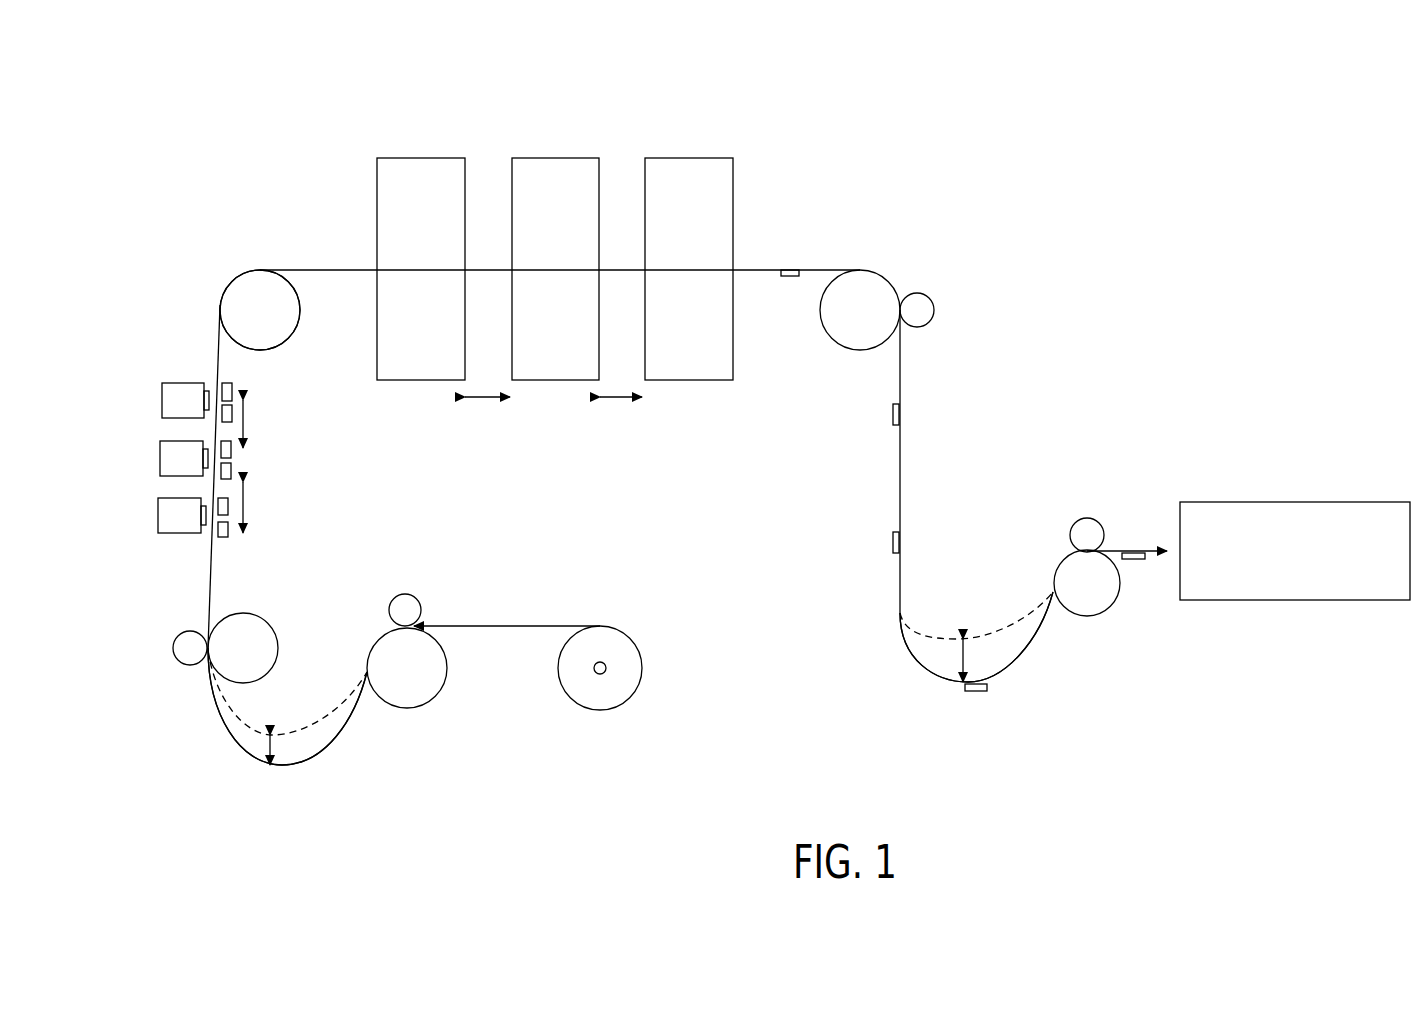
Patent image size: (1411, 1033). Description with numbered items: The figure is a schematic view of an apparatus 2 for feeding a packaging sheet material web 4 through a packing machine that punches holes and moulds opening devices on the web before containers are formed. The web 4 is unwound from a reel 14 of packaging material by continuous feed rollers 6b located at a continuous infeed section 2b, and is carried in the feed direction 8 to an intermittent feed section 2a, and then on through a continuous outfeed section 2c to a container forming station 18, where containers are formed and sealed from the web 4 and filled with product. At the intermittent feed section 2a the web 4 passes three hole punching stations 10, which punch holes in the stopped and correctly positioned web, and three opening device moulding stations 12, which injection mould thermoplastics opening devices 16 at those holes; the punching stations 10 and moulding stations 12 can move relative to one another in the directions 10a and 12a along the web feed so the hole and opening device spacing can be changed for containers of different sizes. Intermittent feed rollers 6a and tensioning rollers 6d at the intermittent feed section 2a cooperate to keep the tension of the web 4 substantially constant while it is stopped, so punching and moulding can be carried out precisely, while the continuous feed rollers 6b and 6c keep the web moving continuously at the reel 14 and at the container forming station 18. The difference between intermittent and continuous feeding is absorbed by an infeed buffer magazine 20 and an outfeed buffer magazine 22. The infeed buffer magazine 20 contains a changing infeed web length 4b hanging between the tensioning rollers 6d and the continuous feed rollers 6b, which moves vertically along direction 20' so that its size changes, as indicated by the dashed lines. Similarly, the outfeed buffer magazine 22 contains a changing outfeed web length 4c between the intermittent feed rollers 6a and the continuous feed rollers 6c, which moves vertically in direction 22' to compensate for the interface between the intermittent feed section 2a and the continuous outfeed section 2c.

The apparatus 2 is at (935, 200).
The intermittent feed section 2a is at (292, 357).
The continuous infeed section 2b is at (405, 594).
The continuous outfeed section 2c is at (1050, 550).
The packaging sheet material web 4 is at (902, 440).
The changing infeed web length 4b is at (253, 757).
The changing outfeed web length 4c is at (935, 675).
The intermittent feed rollers 6a is at (229, 280).
The continuous feed rollers 6b is at (405, 708).
The continuous feed rollers 6c is at (1087, 617).
The tensioning rollers 6d is at (190, 665).
The feed direction 8 is at (1160, 548).
The hole punching station 10 is at (145, 467).
The direction of movement of hole punching stations 10a is at (245, 424).
The opening device moulding station 12 is at (430, 143).
The direction of movement of opening device moulding stations 12a is at (487, 402).
The reel of packaging material web 14 is at (602, 626).
The opening devices 16 is at (790, 278).
The container forming station 18 is at (1237, 602).
The infeed buffer magazine 20 is at (287, 744).
The direction of vertical movement of infeed web length 20' is at (287, 707).
The outfeed buffer magazine 22 is at (986, 670).
The direction of vertical movement of outfeed web length 22' is at (976, 636).